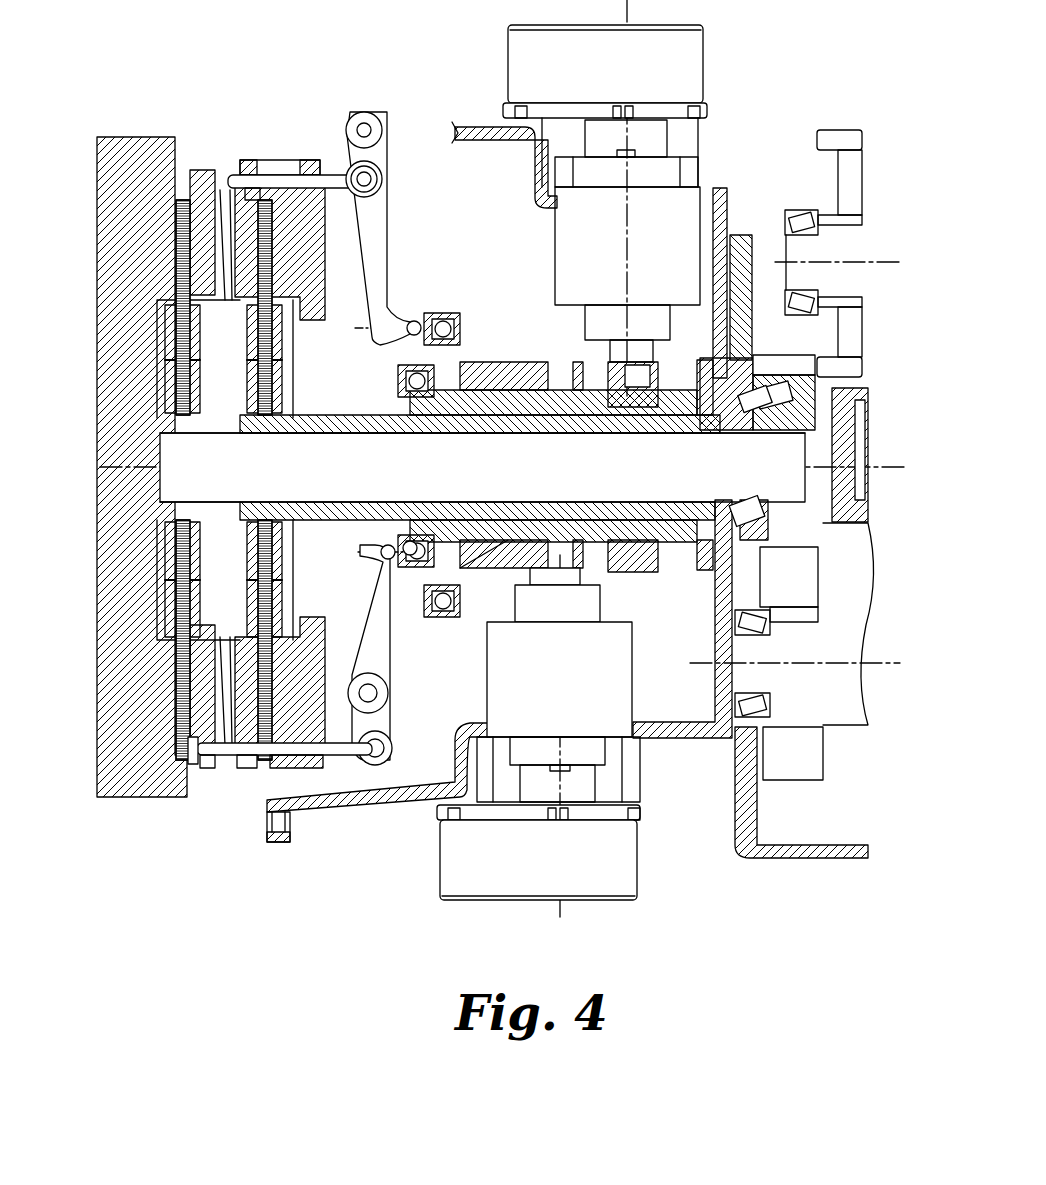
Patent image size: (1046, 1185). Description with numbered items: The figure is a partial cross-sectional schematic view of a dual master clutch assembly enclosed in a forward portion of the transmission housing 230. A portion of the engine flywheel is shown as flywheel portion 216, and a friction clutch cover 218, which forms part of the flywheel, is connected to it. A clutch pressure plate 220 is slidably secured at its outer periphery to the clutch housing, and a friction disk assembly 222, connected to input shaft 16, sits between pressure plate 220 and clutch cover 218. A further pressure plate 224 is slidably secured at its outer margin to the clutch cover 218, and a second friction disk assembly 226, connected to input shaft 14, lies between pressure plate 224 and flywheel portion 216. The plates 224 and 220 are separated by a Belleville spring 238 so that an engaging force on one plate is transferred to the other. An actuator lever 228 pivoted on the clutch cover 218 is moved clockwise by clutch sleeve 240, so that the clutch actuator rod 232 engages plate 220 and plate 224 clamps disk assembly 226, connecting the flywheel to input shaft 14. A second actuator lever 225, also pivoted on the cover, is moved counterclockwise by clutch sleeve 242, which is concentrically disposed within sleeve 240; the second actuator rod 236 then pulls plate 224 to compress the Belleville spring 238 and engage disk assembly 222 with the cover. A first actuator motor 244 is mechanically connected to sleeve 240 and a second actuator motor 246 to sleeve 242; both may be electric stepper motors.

The input shaft 14 is at (520, 497).
The input shaft 16 is at (300, 415).
The flywheel portion 216 is at (95, 205).
The friction clutch cover 218 is at (240, 230).
The clutch pressure plate 220 is at (232, 245).
The friction disk assembly 222 is at (190, 400).
The pressure plate 224 is at (200, 220).
The second actuator lever 225 is at (370, 628).
The second friction disk assembly 226 is at (247, 367).
The actuator lever 228 is at (368, 218).
The transmission housing 230 is at (488, 135).
The clutch actuator rod 232 is at (275, 183).
The second actuator rod 236 is at (265, 752).
The Belleville spring 238 is at (188, 748).
The clutch sleeve 240 is at (512, 375).
The clutch sleeve 242 is at (455, 617).
The first actuator motor 244 is at (578, 723).
The second actuator motor 246 is at (680, 70).